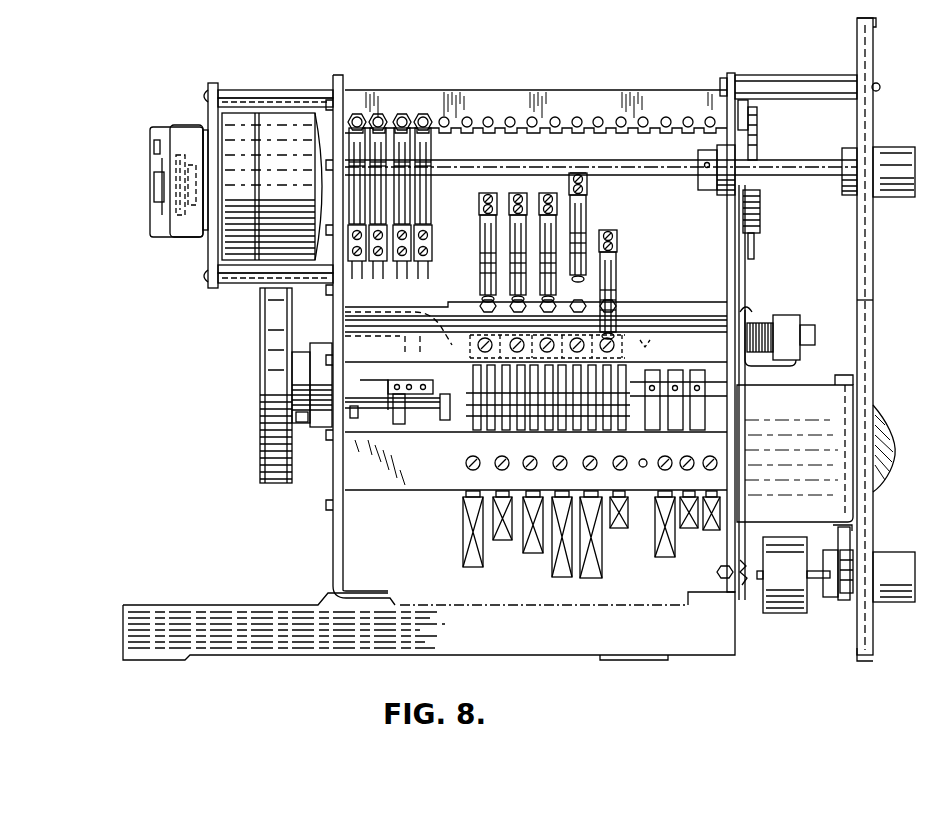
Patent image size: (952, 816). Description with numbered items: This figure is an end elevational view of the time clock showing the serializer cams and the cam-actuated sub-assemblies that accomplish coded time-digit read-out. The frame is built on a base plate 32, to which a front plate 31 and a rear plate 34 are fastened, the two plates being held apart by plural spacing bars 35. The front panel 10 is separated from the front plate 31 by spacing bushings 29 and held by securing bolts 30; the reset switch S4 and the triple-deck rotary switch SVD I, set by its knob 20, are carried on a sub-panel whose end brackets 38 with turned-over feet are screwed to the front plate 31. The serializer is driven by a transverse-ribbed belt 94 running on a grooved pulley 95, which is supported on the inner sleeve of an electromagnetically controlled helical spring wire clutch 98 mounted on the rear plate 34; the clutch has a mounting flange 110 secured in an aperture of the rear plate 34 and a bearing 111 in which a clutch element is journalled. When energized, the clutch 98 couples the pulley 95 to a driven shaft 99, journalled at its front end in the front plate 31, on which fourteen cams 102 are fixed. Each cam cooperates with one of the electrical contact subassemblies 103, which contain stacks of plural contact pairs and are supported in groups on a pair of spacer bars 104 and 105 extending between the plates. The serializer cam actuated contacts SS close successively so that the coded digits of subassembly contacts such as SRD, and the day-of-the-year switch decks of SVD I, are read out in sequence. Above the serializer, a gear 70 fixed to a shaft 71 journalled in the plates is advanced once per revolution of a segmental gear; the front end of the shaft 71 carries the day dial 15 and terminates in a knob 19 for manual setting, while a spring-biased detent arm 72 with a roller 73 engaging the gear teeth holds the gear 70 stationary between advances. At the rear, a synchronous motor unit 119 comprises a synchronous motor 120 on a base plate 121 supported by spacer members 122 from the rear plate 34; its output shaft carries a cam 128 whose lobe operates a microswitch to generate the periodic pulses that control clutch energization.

The front panel 10 is at (873, 326).
The day dial 15 is at (866, 244).
The knob 19 is at (893, 187).
The knob 20 is at (895, 600).
The spacing bushings 29 is at (819, 78).
The securing bolts 30 is at (878, 88).
The front plate 31 is at (727, 243).
The base plate 32 is at (510, 645).
The rear plate 34 is at (341, 519).
The spacing bars 35 is at (491, 97).
The end brackets 38 is at (830, 398).
The gear 70 is at (754, 118).
The shaft 71 is at (638, 172).
The detent arm 72 is at (746, 278).
The roller 73 is at (758, 198).
The belt 94 is at (275, 484).
The pulley 95 is at (258, 381).
The helical spring wire clutch 98 is at (416, 432).
The driven shaft 99 is at (460, 400).
The cams 102 is at (596, 382).
The electrical contact subassemblies 103 is at (448, 345).
The spacer bar 104 is at (673, 310).
The spacer bar 105 is at (420, 483).
The mounting flange 110 is at (320, 433).
The bearing 111 is at (312, 425).
The synchronous motor unit 119 is at (130, 180).
The synchronous motor 120 is at (240, 250).
The base plate 121 is at (212, 252).
The spacer members 122 is at (244, 100).
The cam 128 is at (184, 156).
The subassembly contacts SRD is at (432, 141).
The serializer cam actuated contacts SS is at (601, 233).
The reset switch S4 is at (888, 460).
The triple-deck rotary switch SVD I is at (785, 606).